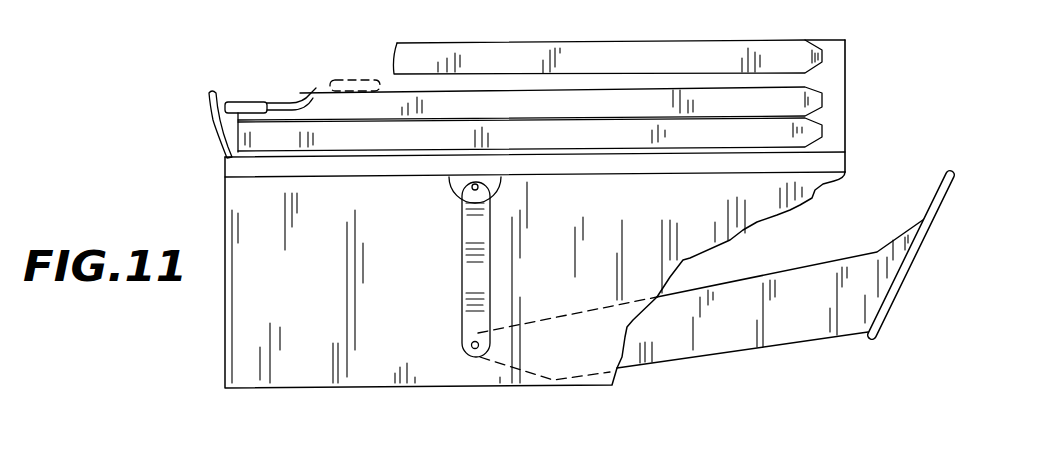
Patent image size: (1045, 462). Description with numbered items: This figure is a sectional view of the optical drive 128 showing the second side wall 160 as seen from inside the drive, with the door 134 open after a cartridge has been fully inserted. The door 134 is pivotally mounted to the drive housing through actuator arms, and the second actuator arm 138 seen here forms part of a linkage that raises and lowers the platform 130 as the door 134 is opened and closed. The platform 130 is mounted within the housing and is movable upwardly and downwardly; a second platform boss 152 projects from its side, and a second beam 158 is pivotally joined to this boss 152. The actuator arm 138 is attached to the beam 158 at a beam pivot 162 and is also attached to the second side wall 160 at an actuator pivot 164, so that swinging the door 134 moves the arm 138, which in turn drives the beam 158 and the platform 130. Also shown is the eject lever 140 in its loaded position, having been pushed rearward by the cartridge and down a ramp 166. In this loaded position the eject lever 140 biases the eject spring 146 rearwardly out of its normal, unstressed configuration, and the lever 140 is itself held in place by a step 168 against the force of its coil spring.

The optical drive 128 is at (852, 41).
The platform 130 is at (830, 162).
The door 134 is at (888, 312).
The second actuator arm 138 is at (812, 323).
The eject lever 140 is at (238, 100).
The eject spring 146 is at (212, 123).
The second platform boss 152 is at (455, 184).
The second beam 158 is at (472, 278).
The second side wall 160 is at (332, 295).
The beam pivot 162 is at (470, 347).
The actuator pivot 164 is at (585, 346).
The ramp 166 is at (292, 96).
The step 168 is at (313, 90).